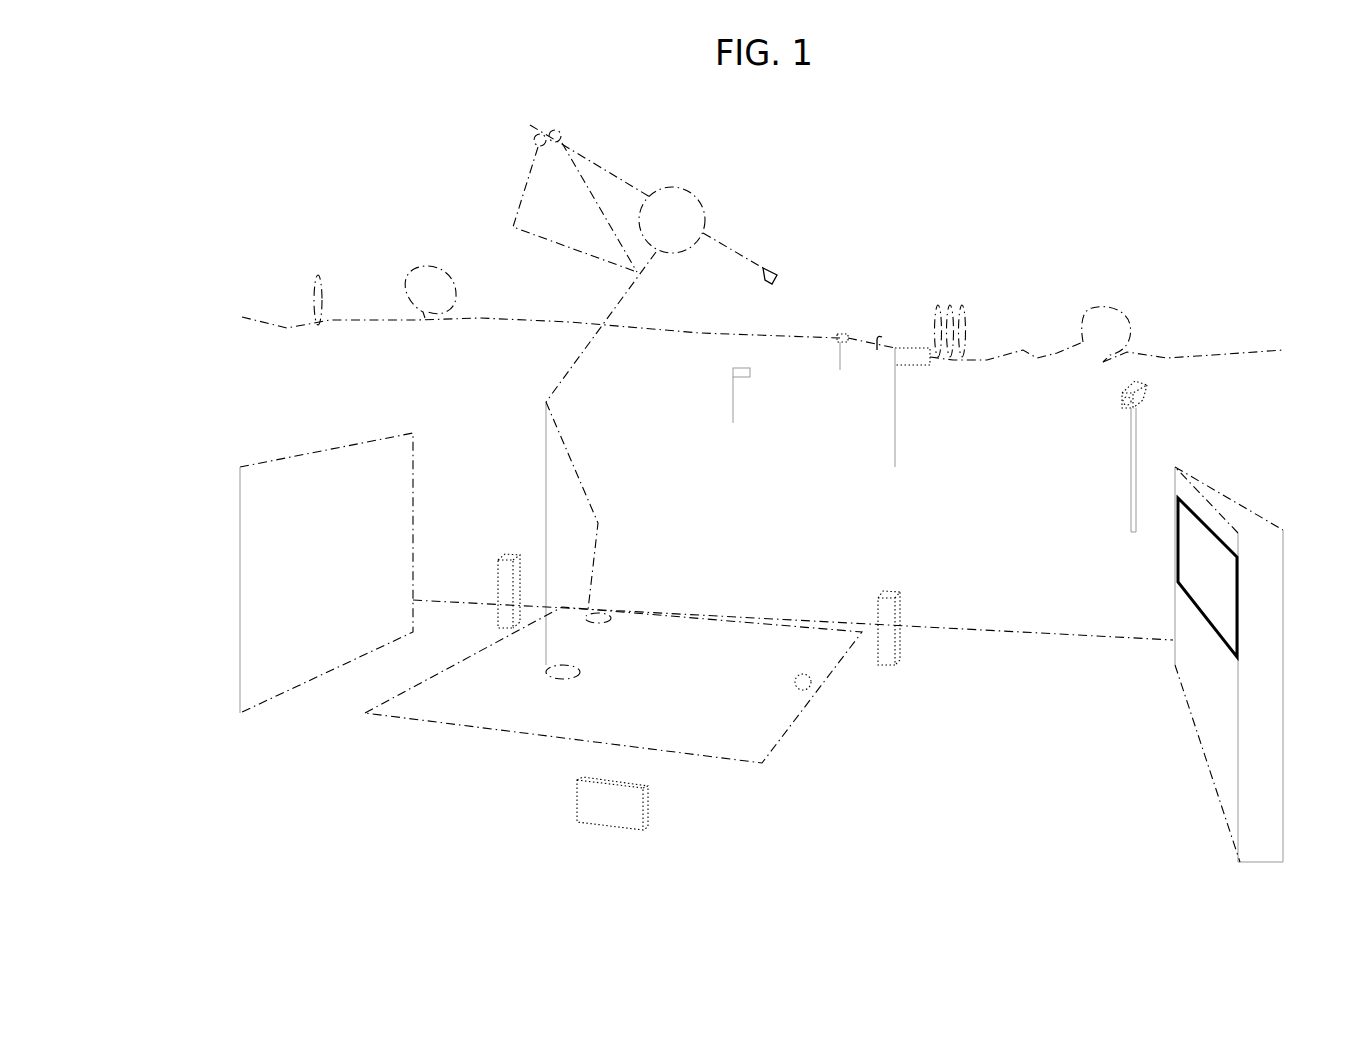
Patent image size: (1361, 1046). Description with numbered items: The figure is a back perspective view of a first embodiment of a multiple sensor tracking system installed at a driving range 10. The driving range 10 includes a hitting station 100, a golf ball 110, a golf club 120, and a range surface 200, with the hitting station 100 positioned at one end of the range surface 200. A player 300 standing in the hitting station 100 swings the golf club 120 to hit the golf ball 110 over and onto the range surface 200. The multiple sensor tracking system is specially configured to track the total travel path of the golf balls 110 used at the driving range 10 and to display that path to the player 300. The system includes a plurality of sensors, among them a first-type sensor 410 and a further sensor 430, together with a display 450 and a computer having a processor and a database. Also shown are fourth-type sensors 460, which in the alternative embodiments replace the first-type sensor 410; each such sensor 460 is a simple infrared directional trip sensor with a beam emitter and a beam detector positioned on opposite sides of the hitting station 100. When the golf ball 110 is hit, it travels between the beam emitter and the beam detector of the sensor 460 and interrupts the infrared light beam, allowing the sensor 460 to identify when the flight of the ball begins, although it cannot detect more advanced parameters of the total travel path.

The driving range 10 is at (348, 137).
The hitting station 100 is at (315, 748).
The golf ball 110 is at (800, 686).
The golf club 120 is at (773, 270).
The range surface 200 is at (820, 265).
The player 300 is at (570, 358).
The first-type sensor 410 is at (613, 797).
The sensor 430 is at (1143, 398).
The display 450 is at (1223, 568).
The fourth-type sensor 460 is at (510, 553).